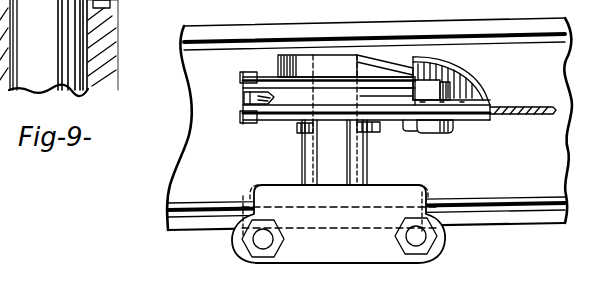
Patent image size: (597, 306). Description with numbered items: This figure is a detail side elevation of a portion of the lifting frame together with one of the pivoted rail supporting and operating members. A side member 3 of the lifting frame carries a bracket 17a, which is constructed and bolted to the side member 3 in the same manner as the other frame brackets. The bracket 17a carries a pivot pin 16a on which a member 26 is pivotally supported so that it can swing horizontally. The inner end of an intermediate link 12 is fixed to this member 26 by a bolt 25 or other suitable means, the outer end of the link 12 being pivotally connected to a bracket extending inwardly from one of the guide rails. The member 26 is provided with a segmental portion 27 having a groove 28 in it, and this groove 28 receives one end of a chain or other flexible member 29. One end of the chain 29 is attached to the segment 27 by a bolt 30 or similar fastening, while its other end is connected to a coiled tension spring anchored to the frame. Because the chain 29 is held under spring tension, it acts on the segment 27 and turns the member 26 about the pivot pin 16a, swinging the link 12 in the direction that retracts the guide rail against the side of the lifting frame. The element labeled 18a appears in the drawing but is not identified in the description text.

The side member 3 is at (186, 173).
The intermediate link 12 is at (521, 114).
The pivot pin 16a is at (338, 52).
The bracket 17a is at (338, 224).
The wall member 18a is at (112, 8).
The bolt 25 is at (430, 132).
The member 26 is at (472, 75).
The segmental portion 27 is at (291, 114).
The groove 28 is at (380, 97).
The chain 29 is at (366, 94).
The bolt 30 is at (247, 93).